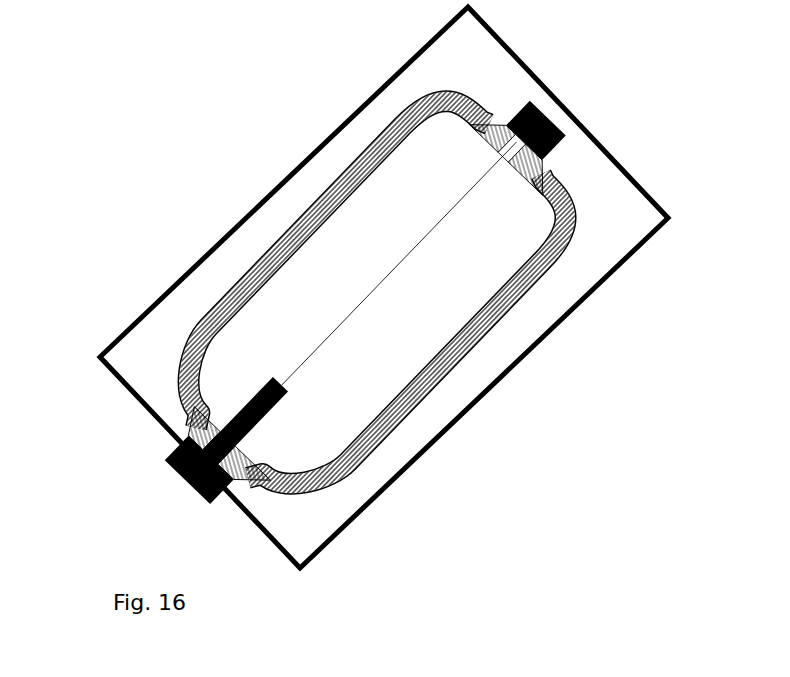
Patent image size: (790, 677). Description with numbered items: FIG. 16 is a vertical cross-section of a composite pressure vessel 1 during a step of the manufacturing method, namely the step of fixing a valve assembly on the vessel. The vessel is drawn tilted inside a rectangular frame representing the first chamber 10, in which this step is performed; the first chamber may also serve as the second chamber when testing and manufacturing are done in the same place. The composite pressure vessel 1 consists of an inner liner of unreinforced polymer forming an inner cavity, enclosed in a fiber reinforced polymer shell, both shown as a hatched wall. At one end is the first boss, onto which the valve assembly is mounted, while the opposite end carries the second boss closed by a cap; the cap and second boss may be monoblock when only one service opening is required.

The composite pressure vessel 1 is at (391, 300).
The first chamber 10 is at (355, 100).